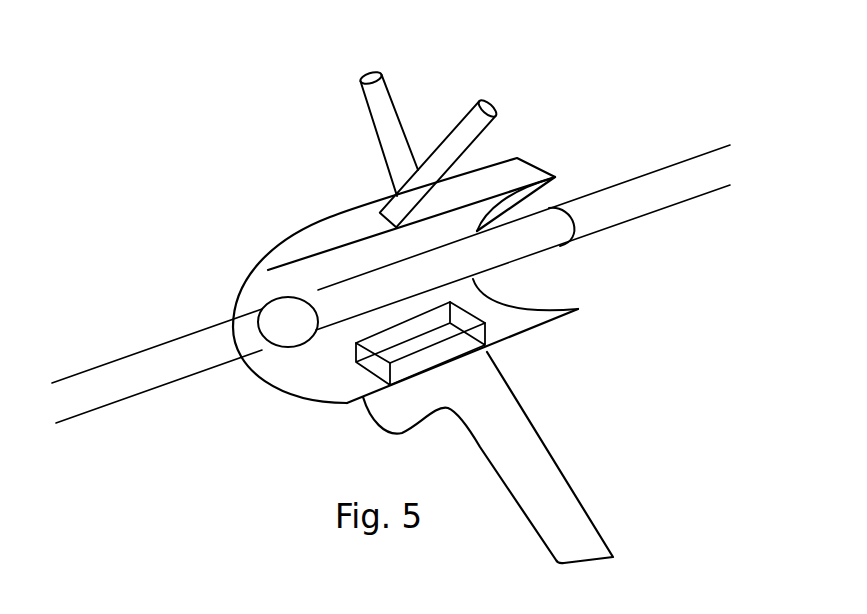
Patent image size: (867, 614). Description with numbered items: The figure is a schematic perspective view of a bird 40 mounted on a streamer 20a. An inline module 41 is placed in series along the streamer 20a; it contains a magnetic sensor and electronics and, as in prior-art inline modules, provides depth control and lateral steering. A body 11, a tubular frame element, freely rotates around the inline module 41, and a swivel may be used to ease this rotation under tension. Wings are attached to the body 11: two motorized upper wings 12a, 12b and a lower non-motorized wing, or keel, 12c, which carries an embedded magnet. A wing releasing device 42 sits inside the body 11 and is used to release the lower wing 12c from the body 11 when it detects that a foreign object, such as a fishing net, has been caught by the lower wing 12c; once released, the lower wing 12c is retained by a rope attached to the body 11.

The body 11 is at (243, 264).
The motorized upper wing 12a is at (447, 128).
The motorized upper wing 12b is at (366, 102).
The lower non-motorized wing 12c is at (552, 472).
The streamer 20a is at (660, 207).
The bird 40 is at (573, 146).
The inline module 41 is at (537, 252).
The wing releasing device 42 is at (372, 366).